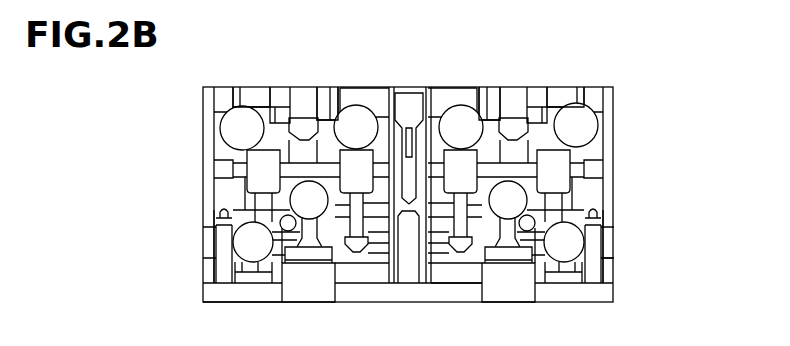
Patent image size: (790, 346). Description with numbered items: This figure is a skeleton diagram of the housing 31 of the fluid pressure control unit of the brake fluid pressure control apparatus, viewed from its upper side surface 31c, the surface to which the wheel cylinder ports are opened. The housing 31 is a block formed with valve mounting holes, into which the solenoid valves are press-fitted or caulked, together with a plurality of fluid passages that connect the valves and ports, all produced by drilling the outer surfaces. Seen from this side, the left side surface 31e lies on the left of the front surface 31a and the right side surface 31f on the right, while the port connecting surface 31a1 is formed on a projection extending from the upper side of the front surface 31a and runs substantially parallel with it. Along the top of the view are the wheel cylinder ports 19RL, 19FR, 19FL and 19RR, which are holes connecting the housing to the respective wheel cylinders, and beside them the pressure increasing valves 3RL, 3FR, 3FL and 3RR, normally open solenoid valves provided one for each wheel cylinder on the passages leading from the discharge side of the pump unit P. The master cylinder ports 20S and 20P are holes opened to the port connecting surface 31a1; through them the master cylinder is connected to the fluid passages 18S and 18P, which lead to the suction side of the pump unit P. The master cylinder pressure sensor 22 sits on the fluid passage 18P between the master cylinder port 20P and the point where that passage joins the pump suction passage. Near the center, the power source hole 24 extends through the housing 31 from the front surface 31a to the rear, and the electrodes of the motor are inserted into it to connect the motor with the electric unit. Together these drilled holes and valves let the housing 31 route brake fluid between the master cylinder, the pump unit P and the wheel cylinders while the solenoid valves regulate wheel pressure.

The housing 31 is at (637, 84).
The front surface 31a is at (207, 288).
The port connecting surface 31a1 is at (232, 303).
The upper side surface 31c is at (610, 275).
The left side surface 31e is at (207, 267).
The right side surface 31f is at (615, 267).
The pressure increasing valve 3RL is at (250, 89).
The pressure increasing valve 3FR is at (335, 88).
The pressure increasing valve 3FL is at (445, 95).
The pressure increasing valve 3RR is at (558, 93).
The wheel cylinder port 19RL is at (226, 128).
The wheel cylinder port 19FR is at (353, 117).
The wheel cylinder port 19FL is at (465, 112).
The wheel cylinder port 19RR is at (570, 110).
The master cylinder pressure sensor 22 is at (408, 93).
The power source hole 24 is at (394, 283).
The pump unit P is at (453, 292).
The master cylinder port 20S is at (312, 293).
The master cylinder port 20P is at (510, 292).
The fluid passage 18S is at (310, 225).
The fluid passage 18P is at (507, 225).